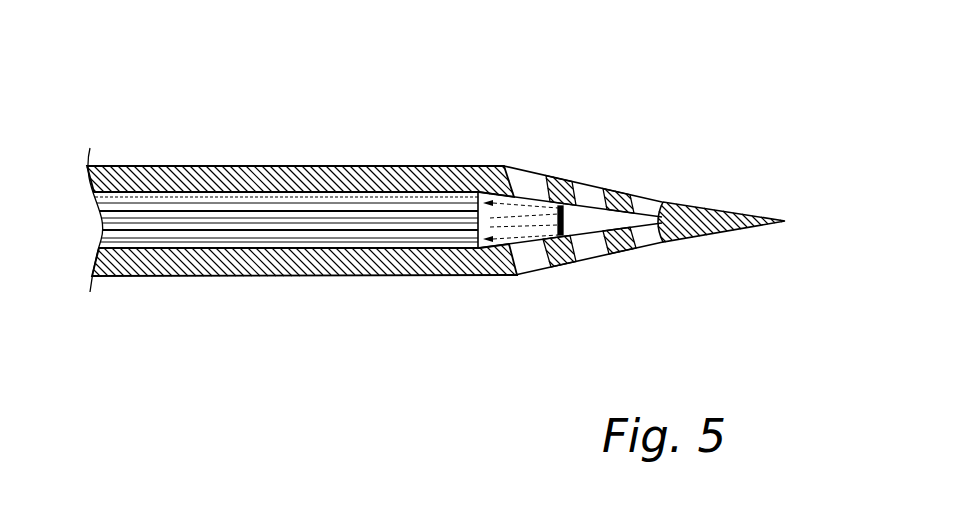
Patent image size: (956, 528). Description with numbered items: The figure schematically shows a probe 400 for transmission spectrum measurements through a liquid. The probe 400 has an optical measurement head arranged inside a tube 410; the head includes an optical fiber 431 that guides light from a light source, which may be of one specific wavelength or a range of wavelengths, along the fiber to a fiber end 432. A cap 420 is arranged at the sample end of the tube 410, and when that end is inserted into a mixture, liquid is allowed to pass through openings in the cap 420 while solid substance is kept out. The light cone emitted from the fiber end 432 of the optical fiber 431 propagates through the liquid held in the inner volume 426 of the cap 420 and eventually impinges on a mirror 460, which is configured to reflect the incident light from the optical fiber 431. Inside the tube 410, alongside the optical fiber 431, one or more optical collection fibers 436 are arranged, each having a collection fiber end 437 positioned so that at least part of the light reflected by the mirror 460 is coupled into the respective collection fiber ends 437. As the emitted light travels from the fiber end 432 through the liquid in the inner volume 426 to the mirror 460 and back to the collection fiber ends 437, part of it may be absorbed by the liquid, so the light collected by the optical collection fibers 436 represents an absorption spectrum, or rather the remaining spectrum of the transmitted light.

The probe 400 is at (643, 88).
The tube 410 is at (140, 167).
The cap 420 is at (668, 248).
The inner volume 426 is at (573, 262).
The optical fiber 431 is at (277, 220).
The fiber end 432 is at (525, 239).
The optical collection fibers 436 is at (320, 240).
The collection fiber ends 437 is at (504, 167).
The mirror 460 is at (565, 218).